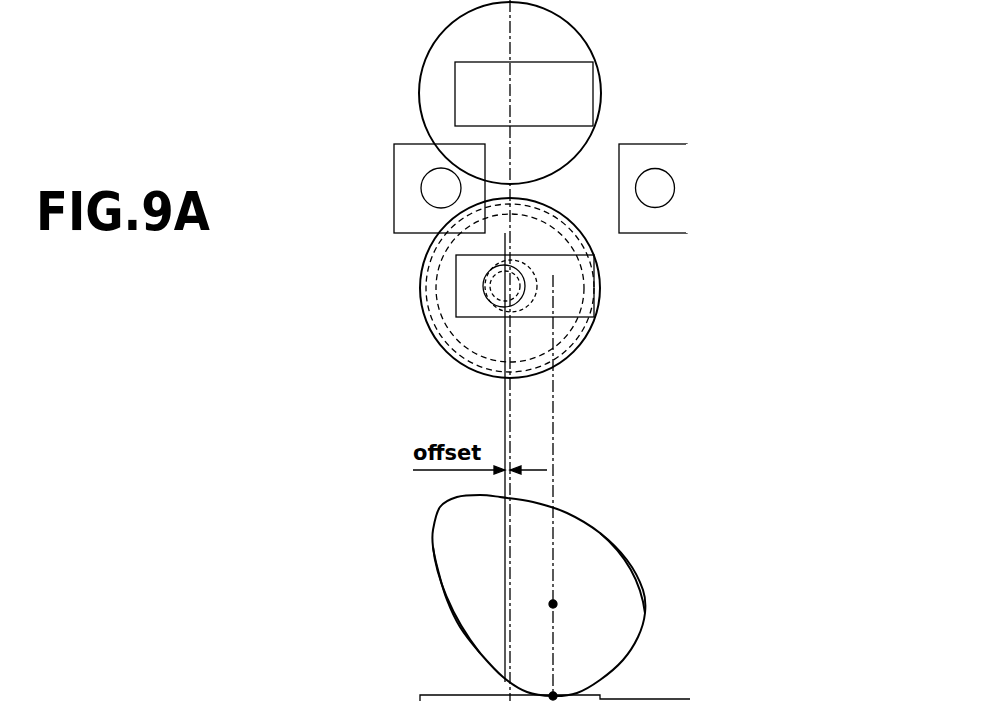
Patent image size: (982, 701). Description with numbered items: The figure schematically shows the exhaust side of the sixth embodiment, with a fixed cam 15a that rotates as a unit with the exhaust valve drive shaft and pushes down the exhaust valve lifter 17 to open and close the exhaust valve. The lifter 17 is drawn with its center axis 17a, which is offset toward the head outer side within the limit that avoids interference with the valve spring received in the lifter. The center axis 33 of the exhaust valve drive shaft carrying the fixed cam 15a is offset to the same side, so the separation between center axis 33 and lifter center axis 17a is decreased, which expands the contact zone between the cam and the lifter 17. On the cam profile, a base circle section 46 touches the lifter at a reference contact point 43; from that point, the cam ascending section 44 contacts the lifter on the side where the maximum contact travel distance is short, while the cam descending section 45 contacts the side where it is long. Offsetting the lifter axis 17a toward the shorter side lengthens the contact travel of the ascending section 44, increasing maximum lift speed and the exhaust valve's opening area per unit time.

The exhaust valve lifter 17 is at (430, 93).
The fixed cam 15a is at (543, 267).
The center axis of exhaust valve lifter 17a is at (513, 407).
The cam ascending section 44 is at (540, 500).
The cam descending section 45 is at (443, 598).
The base circle section 46 is at (642, 573).
The center axis of exhaust valve drive shaft 33 is at (553, 604).
The reference contact point 43 is at (553, 696).